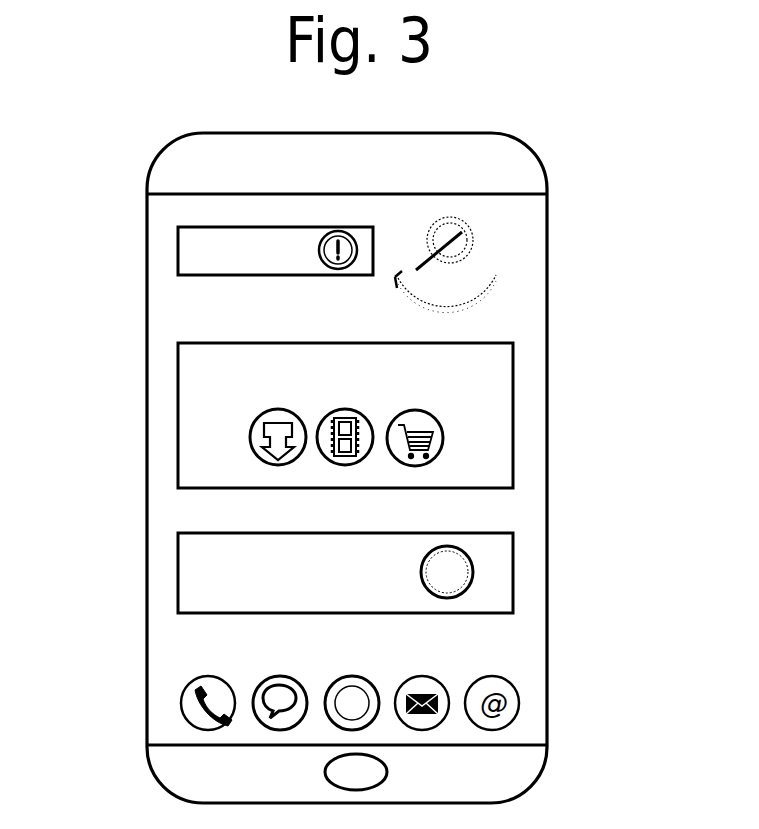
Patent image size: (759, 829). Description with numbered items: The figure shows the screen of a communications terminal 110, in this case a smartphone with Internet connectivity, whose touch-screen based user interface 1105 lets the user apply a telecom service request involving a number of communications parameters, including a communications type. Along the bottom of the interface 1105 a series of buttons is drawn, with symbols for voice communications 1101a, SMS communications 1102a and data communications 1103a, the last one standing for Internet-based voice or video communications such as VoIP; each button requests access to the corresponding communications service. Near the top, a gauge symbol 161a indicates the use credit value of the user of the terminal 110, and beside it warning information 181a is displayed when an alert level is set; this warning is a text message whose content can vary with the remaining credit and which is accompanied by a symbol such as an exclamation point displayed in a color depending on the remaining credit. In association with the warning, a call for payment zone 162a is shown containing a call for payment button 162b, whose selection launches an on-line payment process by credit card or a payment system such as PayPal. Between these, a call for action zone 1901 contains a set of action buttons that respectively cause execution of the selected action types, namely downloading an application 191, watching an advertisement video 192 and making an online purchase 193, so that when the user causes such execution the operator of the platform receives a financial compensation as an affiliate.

The communications terminal 110 is at (534, 155).
The user interface 1105 is at (548, 207).
The warning information 181a is at (178, 250).
The gauge symbol 161a is at (503, 273).
The call for action zone 1901 is at (178, 368).
The downloading an application action type 191 is at (250, 437).
The watching an advertisement video action type 192 is at (348, 465).
The making an online purchase action type 193 is at (418, 466).
The call for payment zone 162a is at (178, 572).
The call for payment button 162b is at (478, 572).
The voice communications button 1101a is at (181, 703).
The SMS communications button 1102a is at (257, 690).
The data communications button 1103a is at (332, 682).